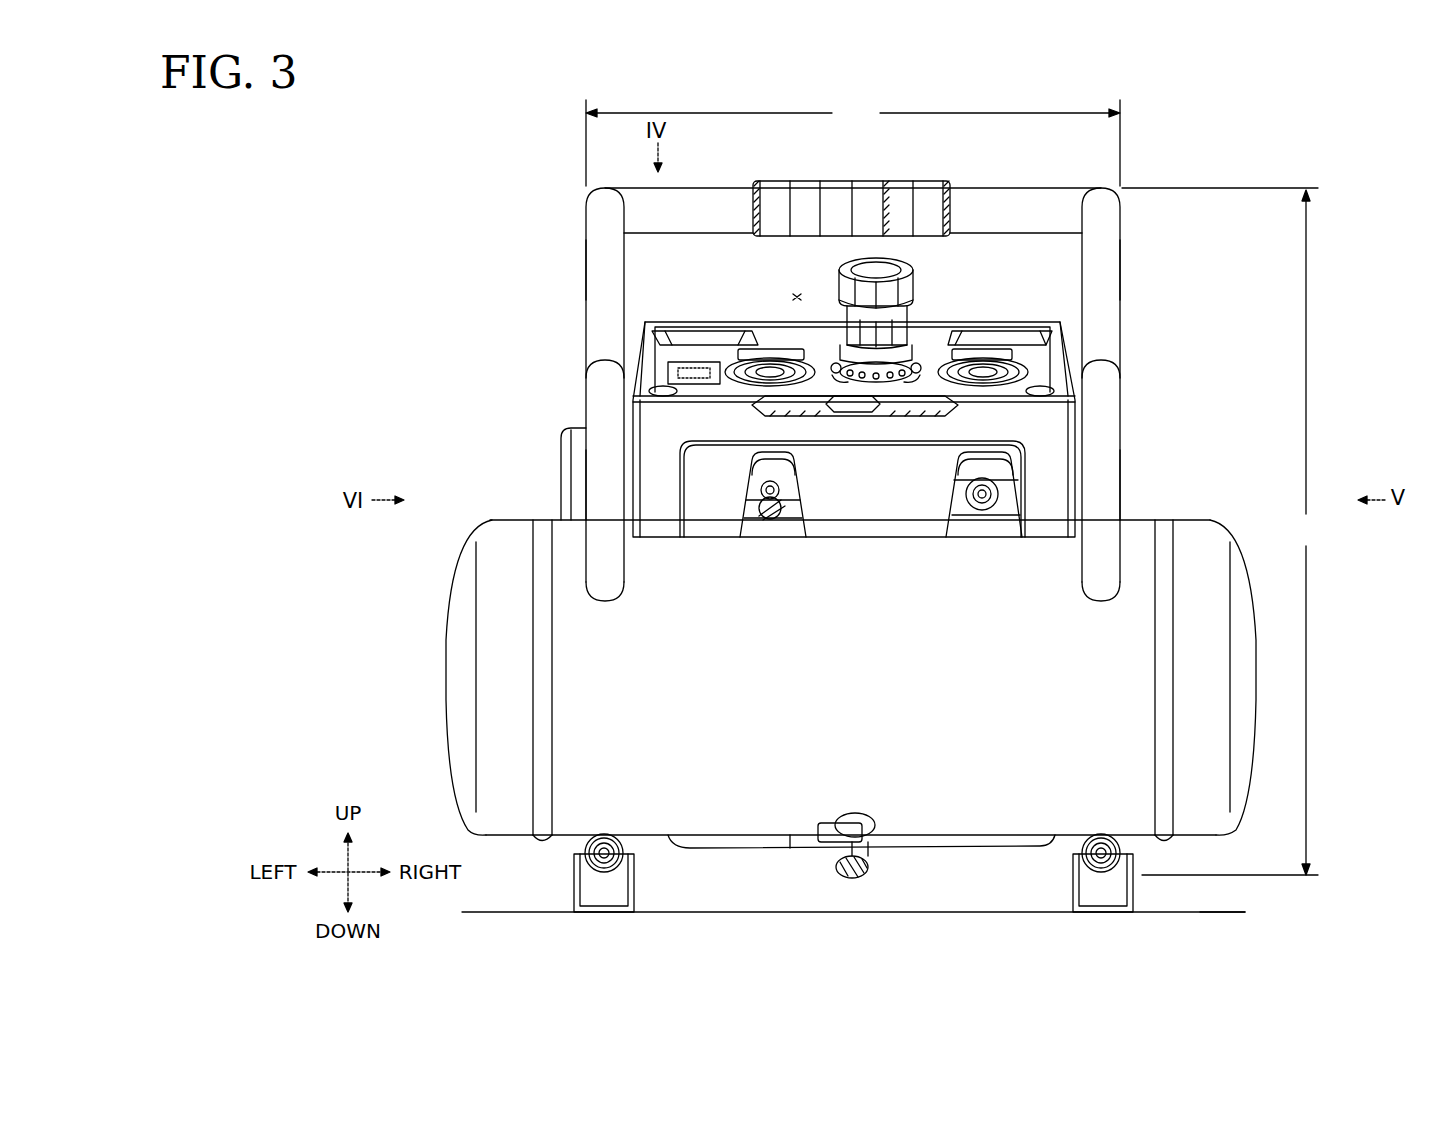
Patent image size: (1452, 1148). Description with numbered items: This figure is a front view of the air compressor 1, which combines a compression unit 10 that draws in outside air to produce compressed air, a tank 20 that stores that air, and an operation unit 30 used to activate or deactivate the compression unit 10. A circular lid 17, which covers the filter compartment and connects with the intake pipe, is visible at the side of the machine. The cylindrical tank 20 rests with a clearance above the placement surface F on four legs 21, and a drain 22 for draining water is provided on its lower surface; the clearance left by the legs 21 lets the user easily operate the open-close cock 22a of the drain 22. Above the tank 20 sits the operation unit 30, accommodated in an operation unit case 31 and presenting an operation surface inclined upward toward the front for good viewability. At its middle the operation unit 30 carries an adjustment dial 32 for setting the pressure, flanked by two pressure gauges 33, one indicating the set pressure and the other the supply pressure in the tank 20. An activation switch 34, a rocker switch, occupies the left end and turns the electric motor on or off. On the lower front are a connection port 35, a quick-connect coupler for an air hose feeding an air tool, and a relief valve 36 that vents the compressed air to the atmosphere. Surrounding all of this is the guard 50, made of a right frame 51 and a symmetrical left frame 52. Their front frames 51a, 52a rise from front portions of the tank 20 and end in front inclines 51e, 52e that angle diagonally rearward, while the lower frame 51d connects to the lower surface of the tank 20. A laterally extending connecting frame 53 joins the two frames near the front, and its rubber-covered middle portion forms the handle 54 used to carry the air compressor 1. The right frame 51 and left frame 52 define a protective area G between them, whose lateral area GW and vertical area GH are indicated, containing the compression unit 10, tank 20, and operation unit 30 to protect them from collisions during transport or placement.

The air compressor 1 is at (521, 186).
The compression unit 10 is at (494, 469).
The lid 17 is at (562, 452).
The tank 20 is at (598, 653).
The legs 21 is at (575, 880).
The drain 22 is at (868, 865).
The open-close cock 22a is at (828, 822).
The operation unit 30 is at (992, 317).
The operation unit case 31 is at (1013, 423).
The adjustment dial 32 is at (878, 268).
The pressure gauges 33 is at (770, 332).
The activation switch 34 is at (692, 360).
The connection port 35 is at (990, 517).
The relief valve 36 is at (767, 512).
The guard 50 is at (576, 246).
The right frame 51 is at (1105, 341).
The front frame 51a is at (1102, 473).
The lower frame 51d is at (636, 862).
The front incline 51e is at (1103, 255).
The left frame 52 is at (603, 318).
The front frame 52a is at (603, 485).
The front incline 52e is at (604, 288).
The connecting frame 53 is at (995, 200).
The handle 54 is at (776, 200).
The protective area G is at (797, 296).
The lateral area GW is at (853, 143).
The vertical area GH is at (1222, 531).
The placement surface F is at (1222, 912).